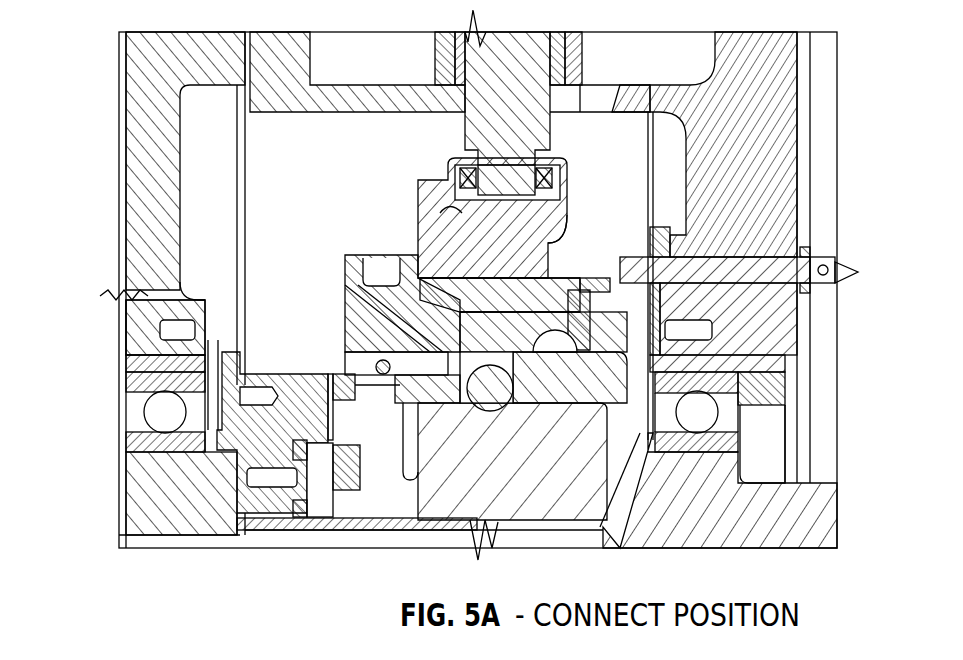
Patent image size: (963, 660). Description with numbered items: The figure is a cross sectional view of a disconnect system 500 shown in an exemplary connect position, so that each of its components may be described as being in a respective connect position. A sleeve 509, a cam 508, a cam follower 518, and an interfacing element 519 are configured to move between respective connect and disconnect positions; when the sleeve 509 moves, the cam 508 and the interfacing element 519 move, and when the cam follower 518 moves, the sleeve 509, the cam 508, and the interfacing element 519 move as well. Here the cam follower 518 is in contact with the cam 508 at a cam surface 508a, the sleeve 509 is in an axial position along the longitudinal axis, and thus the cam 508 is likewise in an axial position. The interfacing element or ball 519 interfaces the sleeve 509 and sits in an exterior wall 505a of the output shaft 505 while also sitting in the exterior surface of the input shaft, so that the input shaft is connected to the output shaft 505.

The disconnect system 500 is at (435, 285).
The output shaft 505 is at (152, 494).
The exterior wall of the output shaft 505a is at (435, 390).
The cam 508 is at (426, 248).
The cam surface 508a is at (500, 230).
The sleeve 509 is at (480, 312).
The cam follower 518 is at (450, 213).
The interfacing element (ball) 519 is at (345, 295).